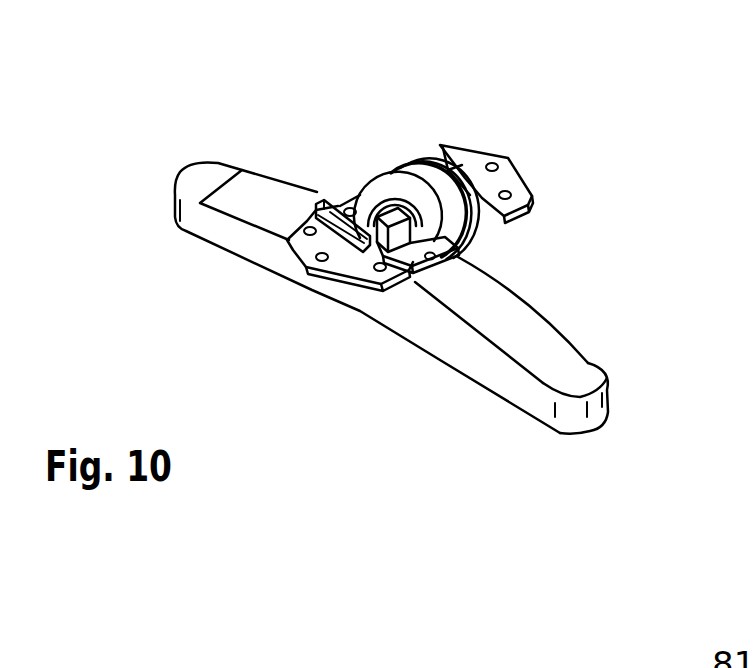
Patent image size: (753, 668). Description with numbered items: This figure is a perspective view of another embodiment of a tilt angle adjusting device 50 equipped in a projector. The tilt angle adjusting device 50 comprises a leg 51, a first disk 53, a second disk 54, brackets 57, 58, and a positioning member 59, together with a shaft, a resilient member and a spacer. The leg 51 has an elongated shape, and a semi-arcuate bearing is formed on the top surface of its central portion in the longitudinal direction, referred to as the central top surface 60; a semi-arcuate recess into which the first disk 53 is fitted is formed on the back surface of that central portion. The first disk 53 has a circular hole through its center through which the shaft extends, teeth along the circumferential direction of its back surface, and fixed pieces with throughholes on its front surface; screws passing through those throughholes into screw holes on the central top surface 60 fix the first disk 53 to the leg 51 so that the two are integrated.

The tilt angle adjusting device 50 is at (345, 128).
The leg 51 is at (493, 392).
The first disk 53 is at (372, 174).
The second disk 54 is at (398, 162).
The bracket 57 is at (317, 283).
The bracket 58 is at (527, 171).
The positioning member 59 is at (318, 190).
The central top surface 60 is at (428, 286).